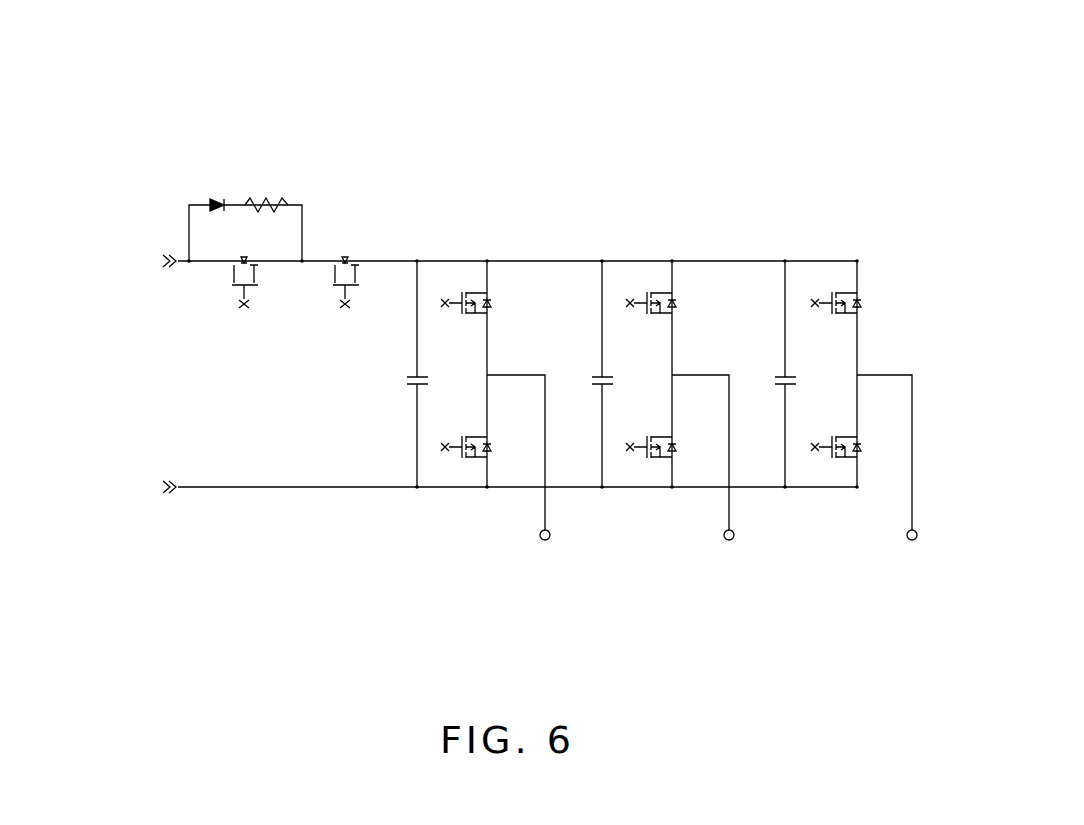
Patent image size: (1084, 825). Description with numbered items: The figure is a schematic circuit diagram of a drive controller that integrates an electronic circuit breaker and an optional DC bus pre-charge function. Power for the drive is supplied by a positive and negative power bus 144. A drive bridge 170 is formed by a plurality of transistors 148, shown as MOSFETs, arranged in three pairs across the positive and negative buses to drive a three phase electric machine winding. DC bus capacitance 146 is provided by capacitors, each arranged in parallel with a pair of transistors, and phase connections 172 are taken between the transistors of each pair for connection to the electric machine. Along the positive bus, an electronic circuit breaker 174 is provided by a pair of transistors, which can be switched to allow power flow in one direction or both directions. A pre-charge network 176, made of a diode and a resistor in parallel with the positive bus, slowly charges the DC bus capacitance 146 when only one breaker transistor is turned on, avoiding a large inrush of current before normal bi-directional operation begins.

The positive and negative power bus 144 is at (127, 280).
The DC bus capacitance 146 is at (386, 386).
The transistors 148 is at (525, 295).
The drive bridge 170 is at (620, 362).
The phase connections 172 is at (532, 584).
The electronic circuit breaker 174 is at (264, 233).
The pre-charge network 176 is at (210, 156).